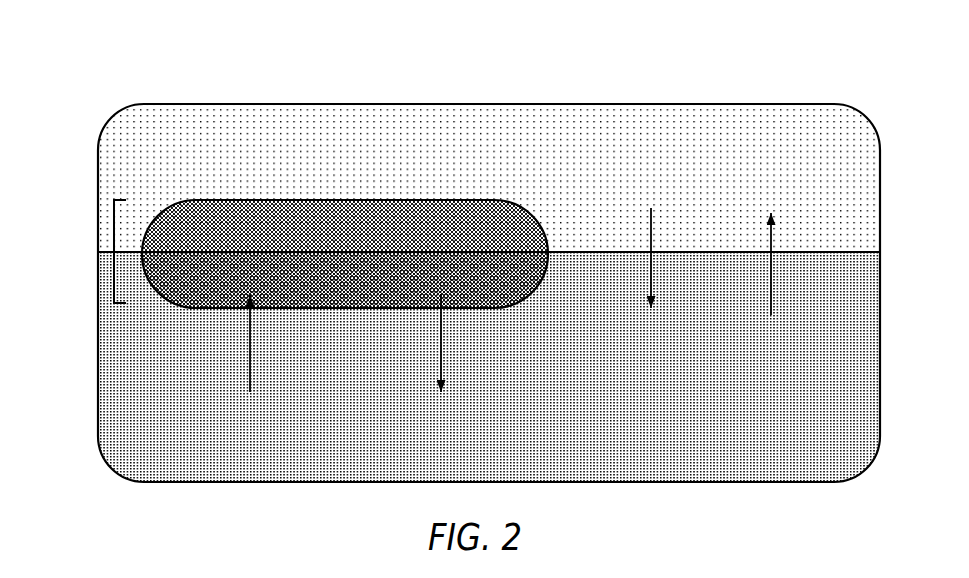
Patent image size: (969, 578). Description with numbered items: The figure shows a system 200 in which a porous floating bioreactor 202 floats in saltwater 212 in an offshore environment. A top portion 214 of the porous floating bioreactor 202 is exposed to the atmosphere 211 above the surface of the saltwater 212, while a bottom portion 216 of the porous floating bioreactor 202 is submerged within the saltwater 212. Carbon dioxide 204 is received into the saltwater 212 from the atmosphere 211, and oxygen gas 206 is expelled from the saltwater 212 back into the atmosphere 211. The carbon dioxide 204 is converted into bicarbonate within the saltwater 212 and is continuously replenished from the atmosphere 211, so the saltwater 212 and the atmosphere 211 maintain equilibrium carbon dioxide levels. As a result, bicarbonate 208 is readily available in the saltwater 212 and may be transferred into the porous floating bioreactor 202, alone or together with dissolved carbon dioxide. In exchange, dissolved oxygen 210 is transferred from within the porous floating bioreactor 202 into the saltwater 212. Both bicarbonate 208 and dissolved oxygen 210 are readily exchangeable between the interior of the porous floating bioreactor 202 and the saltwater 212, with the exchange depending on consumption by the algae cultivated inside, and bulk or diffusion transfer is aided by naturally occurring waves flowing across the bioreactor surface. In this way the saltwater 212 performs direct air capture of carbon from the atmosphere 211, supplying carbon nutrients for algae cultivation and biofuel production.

The system 200 is at (787, 51).
The porous floating bioreactor 202 is at (362, 228).
The carbon dioxide 204 is at (668, 206).
The oxygen gas 206 is at (787, 210).
The bicarbonate 208 is at (266, 288).
The dissolved oxygen 210 is at (457, 290).
The atmosphere 211 is at (507, 144).
The saltwater 212 is at (363, 386).
The top portion 214 is at (114, 226).
The bottom portion 216 is at (114, 281).